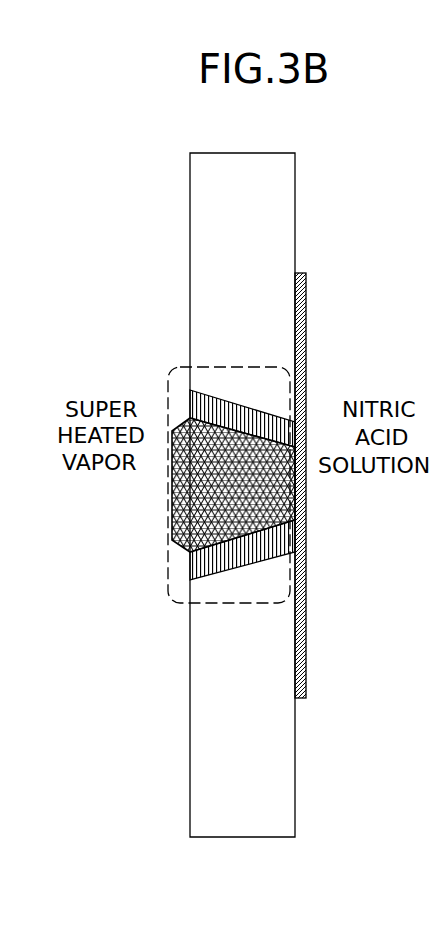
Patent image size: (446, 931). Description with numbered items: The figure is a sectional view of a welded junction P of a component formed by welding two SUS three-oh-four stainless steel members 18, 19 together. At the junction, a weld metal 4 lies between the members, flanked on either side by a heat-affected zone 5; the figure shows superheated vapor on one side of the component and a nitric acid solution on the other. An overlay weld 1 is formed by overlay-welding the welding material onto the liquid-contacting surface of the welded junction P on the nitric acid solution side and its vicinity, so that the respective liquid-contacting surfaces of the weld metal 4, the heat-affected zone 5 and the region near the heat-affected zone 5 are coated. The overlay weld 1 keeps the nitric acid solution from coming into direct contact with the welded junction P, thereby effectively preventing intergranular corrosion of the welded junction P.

The overlay weld 1 is at (306, 650).
The weld metal 4 is at (173, 510).
The heat-affected zone 5 is at (280, 413).
The SUS 304 stainless steel member 18 is at (295, 185).
The SUS 304 stainless steel member 19 is at (287, 785).
The welded junction P is at (175, 378).